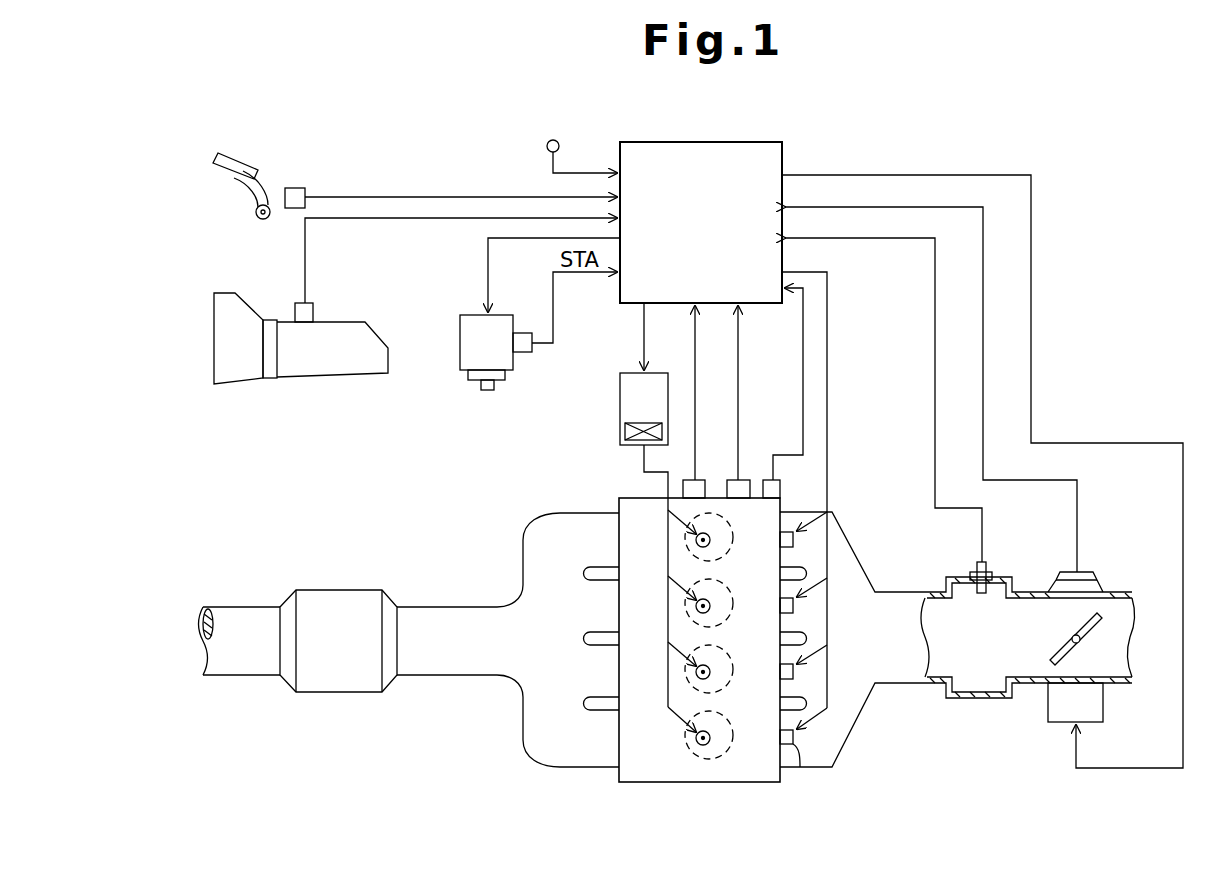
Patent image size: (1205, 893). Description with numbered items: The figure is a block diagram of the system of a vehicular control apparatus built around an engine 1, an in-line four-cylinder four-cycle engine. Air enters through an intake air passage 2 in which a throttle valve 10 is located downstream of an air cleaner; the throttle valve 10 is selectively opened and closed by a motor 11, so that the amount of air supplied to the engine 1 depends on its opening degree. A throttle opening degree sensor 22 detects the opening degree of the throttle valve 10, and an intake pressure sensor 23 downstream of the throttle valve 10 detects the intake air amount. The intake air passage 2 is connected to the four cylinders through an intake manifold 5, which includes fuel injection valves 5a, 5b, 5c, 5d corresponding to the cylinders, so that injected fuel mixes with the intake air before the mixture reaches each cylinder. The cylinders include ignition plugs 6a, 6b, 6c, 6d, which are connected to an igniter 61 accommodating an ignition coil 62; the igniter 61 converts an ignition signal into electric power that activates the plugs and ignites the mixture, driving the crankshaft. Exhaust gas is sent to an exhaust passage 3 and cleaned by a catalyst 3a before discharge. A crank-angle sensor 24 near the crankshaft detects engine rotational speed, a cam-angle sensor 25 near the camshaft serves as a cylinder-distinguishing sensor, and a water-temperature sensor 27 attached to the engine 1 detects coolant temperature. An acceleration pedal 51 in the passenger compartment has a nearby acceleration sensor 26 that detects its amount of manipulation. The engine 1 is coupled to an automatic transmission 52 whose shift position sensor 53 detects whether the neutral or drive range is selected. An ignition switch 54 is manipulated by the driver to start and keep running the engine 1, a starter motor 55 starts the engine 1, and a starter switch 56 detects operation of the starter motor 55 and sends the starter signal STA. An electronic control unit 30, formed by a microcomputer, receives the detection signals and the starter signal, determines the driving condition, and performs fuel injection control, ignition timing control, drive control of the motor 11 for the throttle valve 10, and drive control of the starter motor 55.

The engine 1 is at (790, 797).
The intake air passage 2 is at (1035, 686).
The exhaust passage 3 is at (430, 606).
The catalyst 3a is at (327, 590).
The intake manifold 5 is at (855, 728).
The fuel injection valve 5a is at (797, 541).
The fuel injection valve 5b is at (797, 607).
The fuel injection valve 5c is at (797, 673).
The fuel injection valve 5d is at (798, 766).
The ignition plug 6a is at (695, 544).
The ignition plug 6b is at (695, 610).
The ignition plug 6c is at (695, 676).
The ignition plug 6d is at (695, 742).
The throttle valve 10 is at (1053, 645).
The motor 11 is at (1105, 700).
The throttle opening degree sensor 22 is at (1096, 572).
The intake pressure sensor 23 is at (992, 568).
The crank-angle sensor 24 is at (702, 478).
The cam-angle sensor 25 is at (746, 478).
The acceleration sensor 26 is at (293, 187).
The water-temperature sensor 27 is at (797, 484).
The electronic control unit 30 is at (732, 142).
The acceleration pedal 51 is at (233, 190).
The automatic transmission 52 is at (360, 322).
The shift position sensor 53 is at (292, 305).
The ignition switch 54 is at (559, 141).
The starter motor 55 is at (460, 358).
The starter switch 56 is at (521, 354).
The igniter 61 is at (622, 386).
The ignition coil 62 is at (625, 431).